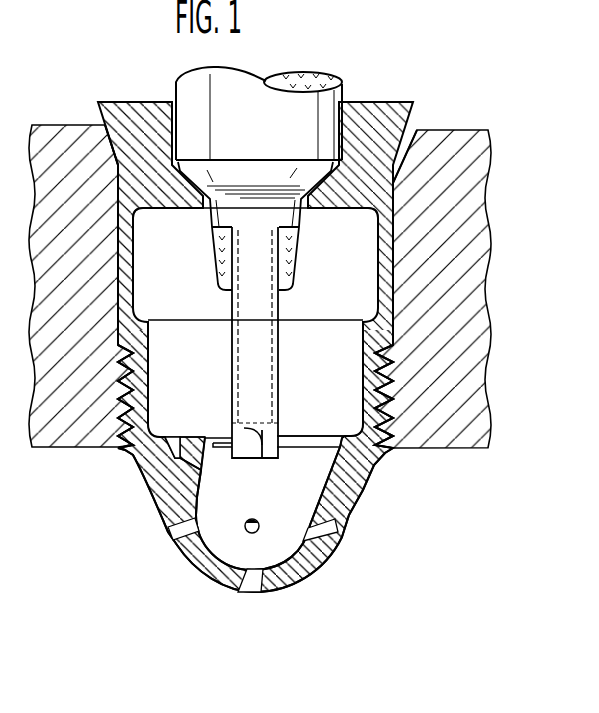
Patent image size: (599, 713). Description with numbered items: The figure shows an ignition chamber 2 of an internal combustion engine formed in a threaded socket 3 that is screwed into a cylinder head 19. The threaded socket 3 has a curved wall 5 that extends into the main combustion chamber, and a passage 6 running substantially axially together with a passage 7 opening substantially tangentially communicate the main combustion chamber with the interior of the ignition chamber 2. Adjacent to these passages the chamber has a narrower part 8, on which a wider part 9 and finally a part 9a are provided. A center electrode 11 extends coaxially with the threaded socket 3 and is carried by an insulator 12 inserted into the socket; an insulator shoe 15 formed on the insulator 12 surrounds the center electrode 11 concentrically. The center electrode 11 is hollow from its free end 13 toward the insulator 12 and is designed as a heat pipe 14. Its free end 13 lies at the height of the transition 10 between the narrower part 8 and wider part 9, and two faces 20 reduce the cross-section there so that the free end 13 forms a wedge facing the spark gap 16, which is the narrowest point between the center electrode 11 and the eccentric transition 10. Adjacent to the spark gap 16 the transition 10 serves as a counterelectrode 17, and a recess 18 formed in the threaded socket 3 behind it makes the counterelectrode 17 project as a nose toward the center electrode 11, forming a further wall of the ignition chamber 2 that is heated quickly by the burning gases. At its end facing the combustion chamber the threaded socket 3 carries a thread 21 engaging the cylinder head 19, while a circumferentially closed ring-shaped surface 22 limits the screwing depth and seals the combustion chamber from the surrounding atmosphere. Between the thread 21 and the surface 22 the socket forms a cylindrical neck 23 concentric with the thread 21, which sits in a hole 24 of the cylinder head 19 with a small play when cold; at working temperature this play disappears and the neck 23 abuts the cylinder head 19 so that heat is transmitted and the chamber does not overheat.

The ignition chamber 2 is at (368, 464).
The threaded socket 3 is at (100, 112).
The wall 5 is at (208, 567).
The passage 6 is at (249, 582).
The passage 7 is at (182, 530).
The narrower part 8 is at (268, 503).
The wider part 9 is at (255, 379).
The part 9a is at (255, 264).
The transition 10 is at (335, 445).
The center electrode 11 is at (279, 375).
The insulator 12 is at (259, 113).
The free end 13 is at (268, 450).
The heat pipe 14 is at (233, 346).
The insulator shoe 15 is at (225, 258).
The spark gap 16 is at (220, 442).
The counterelectrode 17 is at (194, 444).
The recess 18 is at (176, 436).
The cylinder head 19 is at (477, 178).
The faces 20 is at (249, 444).
The thread 21 is at (392, 400).
The surface 22 is at (403, 161).
The cylindrical neck 23 is at (381, 265).
The hole 24 is at (392, 240).